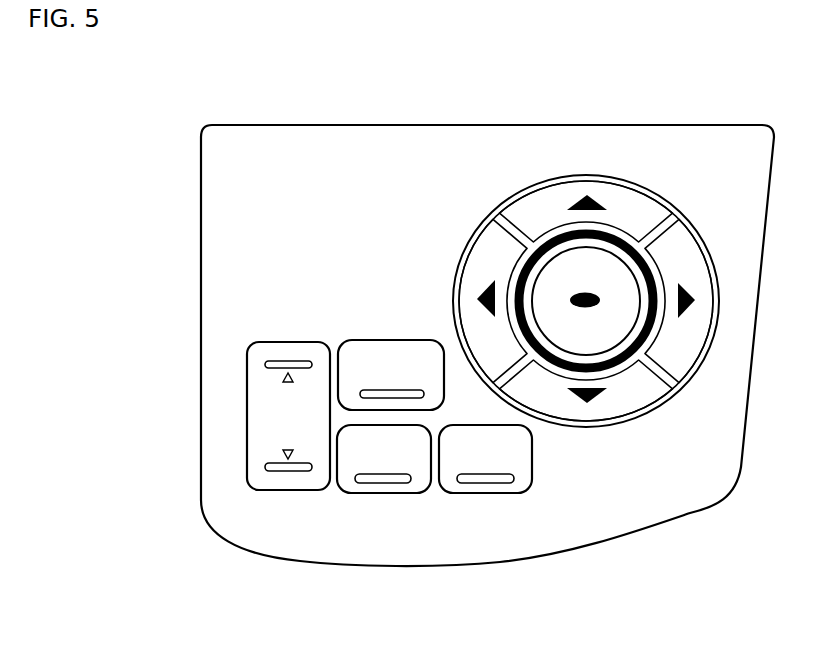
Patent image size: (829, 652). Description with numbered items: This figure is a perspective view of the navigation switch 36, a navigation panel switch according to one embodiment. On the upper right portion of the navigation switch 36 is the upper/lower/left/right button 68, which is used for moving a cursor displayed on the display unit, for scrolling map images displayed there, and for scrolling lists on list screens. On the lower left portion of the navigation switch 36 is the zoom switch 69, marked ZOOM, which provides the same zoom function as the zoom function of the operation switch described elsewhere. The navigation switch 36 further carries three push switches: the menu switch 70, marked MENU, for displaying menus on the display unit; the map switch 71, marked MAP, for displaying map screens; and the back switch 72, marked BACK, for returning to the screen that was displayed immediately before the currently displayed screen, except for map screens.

The navigation switch 36 is at (366, 100).
The upper/lower/left/right button 68 is at (625, 176).
The zoom switch 69 is at (291, 346).
The menu switch 70 is at (385, 352).
The map switch 71 is at (392, 495).
The back switch 72 is at (498, 495).